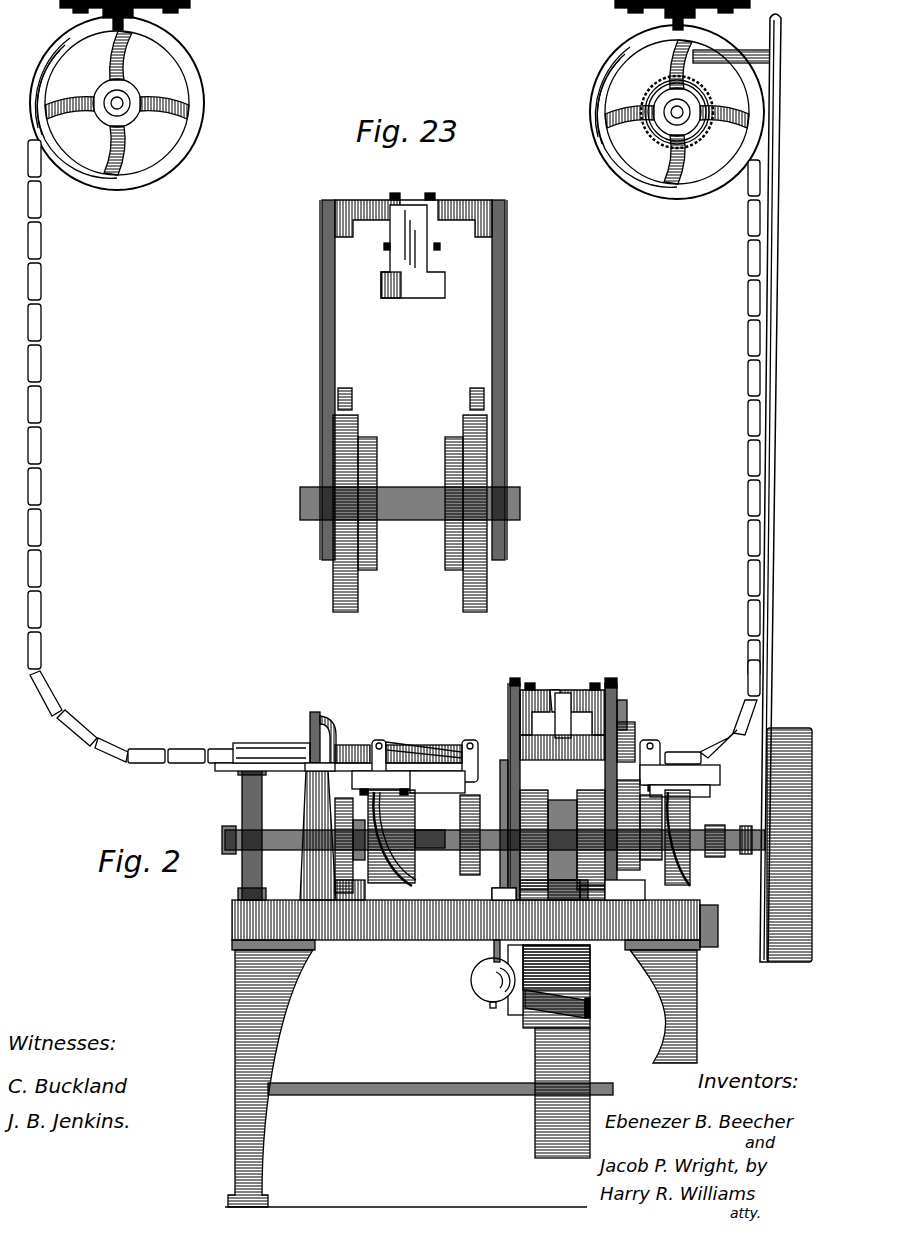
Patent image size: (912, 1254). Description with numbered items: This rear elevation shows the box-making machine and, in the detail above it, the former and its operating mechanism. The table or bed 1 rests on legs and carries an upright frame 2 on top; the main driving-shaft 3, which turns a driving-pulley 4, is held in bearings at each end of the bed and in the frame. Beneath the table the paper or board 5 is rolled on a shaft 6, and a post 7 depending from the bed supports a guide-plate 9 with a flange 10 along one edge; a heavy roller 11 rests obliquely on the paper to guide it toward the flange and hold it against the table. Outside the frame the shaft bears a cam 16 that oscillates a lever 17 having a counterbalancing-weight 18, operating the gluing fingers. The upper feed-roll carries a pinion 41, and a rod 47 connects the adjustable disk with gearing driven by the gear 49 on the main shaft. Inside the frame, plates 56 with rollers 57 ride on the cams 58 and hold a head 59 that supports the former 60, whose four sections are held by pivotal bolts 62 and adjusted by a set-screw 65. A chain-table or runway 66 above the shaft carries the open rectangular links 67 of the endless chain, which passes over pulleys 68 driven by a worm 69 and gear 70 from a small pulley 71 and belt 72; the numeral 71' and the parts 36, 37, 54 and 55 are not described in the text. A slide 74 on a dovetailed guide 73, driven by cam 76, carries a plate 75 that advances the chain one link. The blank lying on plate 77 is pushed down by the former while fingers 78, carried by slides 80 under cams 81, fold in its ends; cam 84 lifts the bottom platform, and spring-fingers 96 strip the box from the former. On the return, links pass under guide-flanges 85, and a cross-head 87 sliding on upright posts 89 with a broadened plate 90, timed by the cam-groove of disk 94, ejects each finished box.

In FIG. 2, the table or bed 1 is at (475, 925).
In FIG. 2, the upright frame 2 is at (625, 705).
In FIG. 23, the main driving-shaft 3 is at (402, 540).
In FIG. 2, the main driving-shaft 3 is at (272, 828).
In FIG. 2, the driving-pulley 4 is at (789, 855).
In FIG. 2, the paper or board 5 is at (553, 1093).
In FIG. 2, the shaft 6 is at (450, 1083).
In FIG. 2, the post 7 is at (492, 950).
In FIG. 2, the guide-plate 9 is at (524, 1026).
In FIG. 2, the flange 10 is at (590, 977).
In FIG. 2, the roller 11 is at (592, 1000).
In FIG. 2, the cam 16 is at (493, 889).
In FIG. 2, the lever 17 is at (500, 760).
In FIG. 2, the counterbalancing-weight 18 is at (477, 983).
In FIG. 2, the gear 36 is at (568, 900).
In FIG. 2, the gear 37 is at (540, 900).
In FIG. 2, the pinion 41 is at (635, 730).
In FIG. 2, the rod 47 is at (662, 812).
In FIG. 2, the gear 49 is at (597, 854).
In FIG. 2, the gear 54 is at (592, 902).
In FIG. 2, the bearing 55 is at (620, 900).
In FIG. 23, the plates 56 is at (322, 306).
In FIG. 2, the plates 56 is at (516, 690).
In FIG. 23, the rollers 57 is at (352, 392).
In FIG. 23, the cams 58 is at (462, 418).
In FIG. 2, the cams 58 is at (470, 888).
In FIG. 23, the head 59 is at (470, 204).
In FIG. 2, the head 59 is at (590, 695).
In FIG. 23, the former 60 is at (413, 262).
In FIG. 2, the former 60 is at (565, 690).
In FIG. 23, the pivotal bolts 62 is at (384, 247).
In FIG. 23, the set-screw 65 is at (430, 193).
In FIG. 2, the chain-table or runway 66 is at (345, 745).
In FIG. 2, the links 67 is at (748, 672).
In FIG. 2, the pulleys 68 is at (402, 107).
In FIG. 2, the worm 69 is at (664, 78).
In FIG. 2, the gear 70 is at (700, 140).
In FIG. 2, the small pulley 71 is at (784, 488).
In FIG. 2, the rod end 71' is at (635, 674).
In FIG. 2, the belt 72 is at (774, 428).
In FIG. 2, the dovetailed guide 73 is at (720, 768).
In FIG. 2, the slide 74 is at (420, 746).
In FIG. 2, the plate 75 is at (388, 742).
In FIG. 2, the cam 76 is at (357, 891).
In FIG. 2, the plate 77 is at (510, 700).
In FIG. 2, the fingers 78 is at (470, 742).
In FIG. 2, the slides 80 is at (708, 786).
In FIG. 2, the cams 81 is at (460, 866).
In FIG. 2, the cam 84 is at (460, 830).
In FIG. 2, the guide-flanges 85 is at (271, 746).
In FIG. 2, the cross-head 87 is at (312, 714).
In FIG. 2, the upright posts 89 is at (310, 770).
In FIG. 2, the broadened plate 90 is at (310, 726).
In FIG. 2, the disk 94 is at (352, 845).
In FIG. 2, the spring-fingers 96 is at (625, 740).